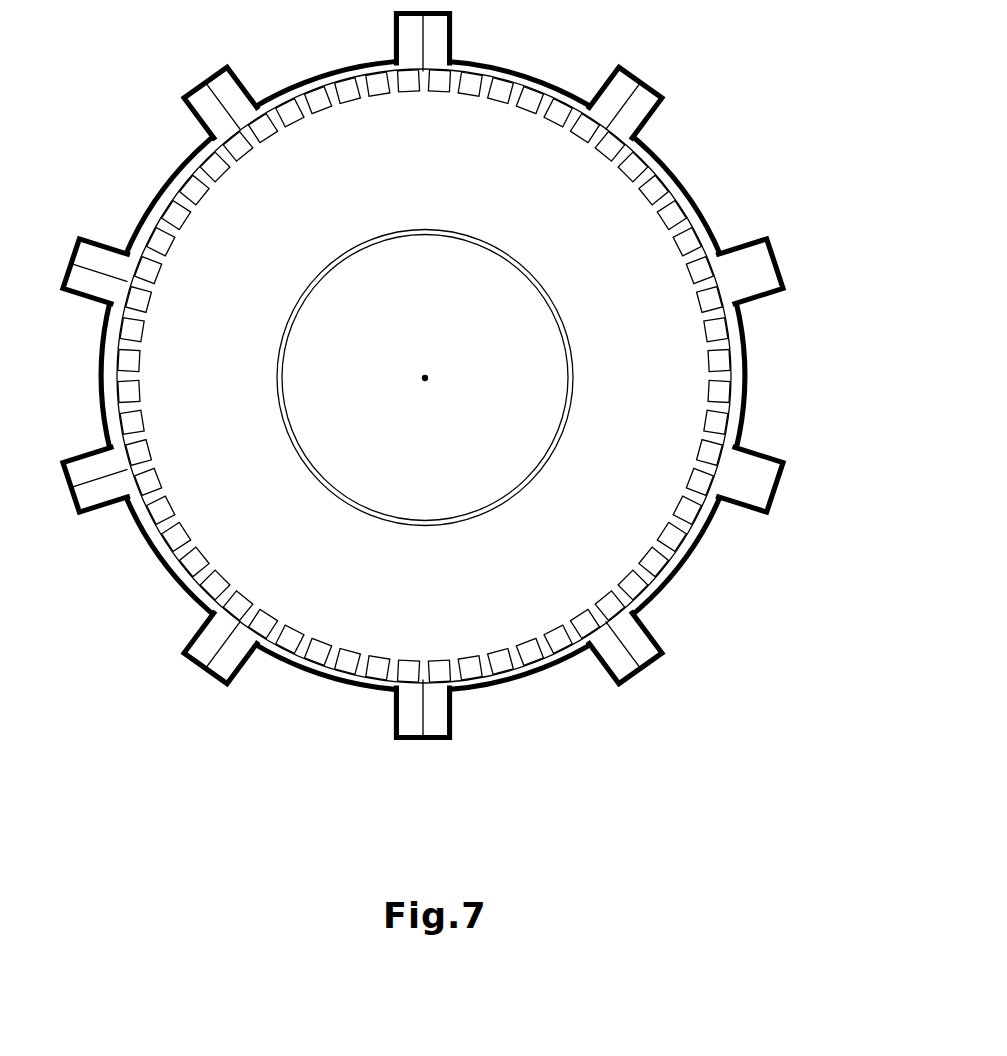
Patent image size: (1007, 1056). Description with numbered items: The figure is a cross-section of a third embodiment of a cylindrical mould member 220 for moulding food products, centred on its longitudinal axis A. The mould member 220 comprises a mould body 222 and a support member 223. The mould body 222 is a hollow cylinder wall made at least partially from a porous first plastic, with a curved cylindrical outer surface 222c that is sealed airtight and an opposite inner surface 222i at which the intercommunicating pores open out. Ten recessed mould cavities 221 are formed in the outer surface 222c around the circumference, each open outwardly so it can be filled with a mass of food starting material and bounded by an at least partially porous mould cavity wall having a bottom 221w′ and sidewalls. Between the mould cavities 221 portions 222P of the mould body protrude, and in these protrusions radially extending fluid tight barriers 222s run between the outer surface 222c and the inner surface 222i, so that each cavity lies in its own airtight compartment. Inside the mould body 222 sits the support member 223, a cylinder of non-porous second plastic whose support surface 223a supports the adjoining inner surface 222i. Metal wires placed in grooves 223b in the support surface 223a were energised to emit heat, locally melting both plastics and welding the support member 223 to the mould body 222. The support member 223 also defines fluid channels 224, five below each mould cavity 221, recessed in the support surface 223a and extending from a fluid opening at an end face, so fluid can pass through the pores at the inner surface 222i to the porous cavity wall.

The mould member 220 is at (193, 804).
The mould cavity 221 is at (423, 363).
The mould cavity wall bottom 221w′ is at (750, 382).
The mould body 222 is at (740, 433).
The protruding portion 222P is at (635, 648).
The fluid tight barrier 222s is at (230, 655).
The cylindrical outer surface 222c is at (606, 129).
The inner surface 222i is at (653, 182).
The support member 223 is at (463, 378).
The support surface 223a is at (770, 266).
The groove 223b is at (559, 683).
The fluid channel 224 is at (680, 502).
The longitudinal axis A is at (439, 378).